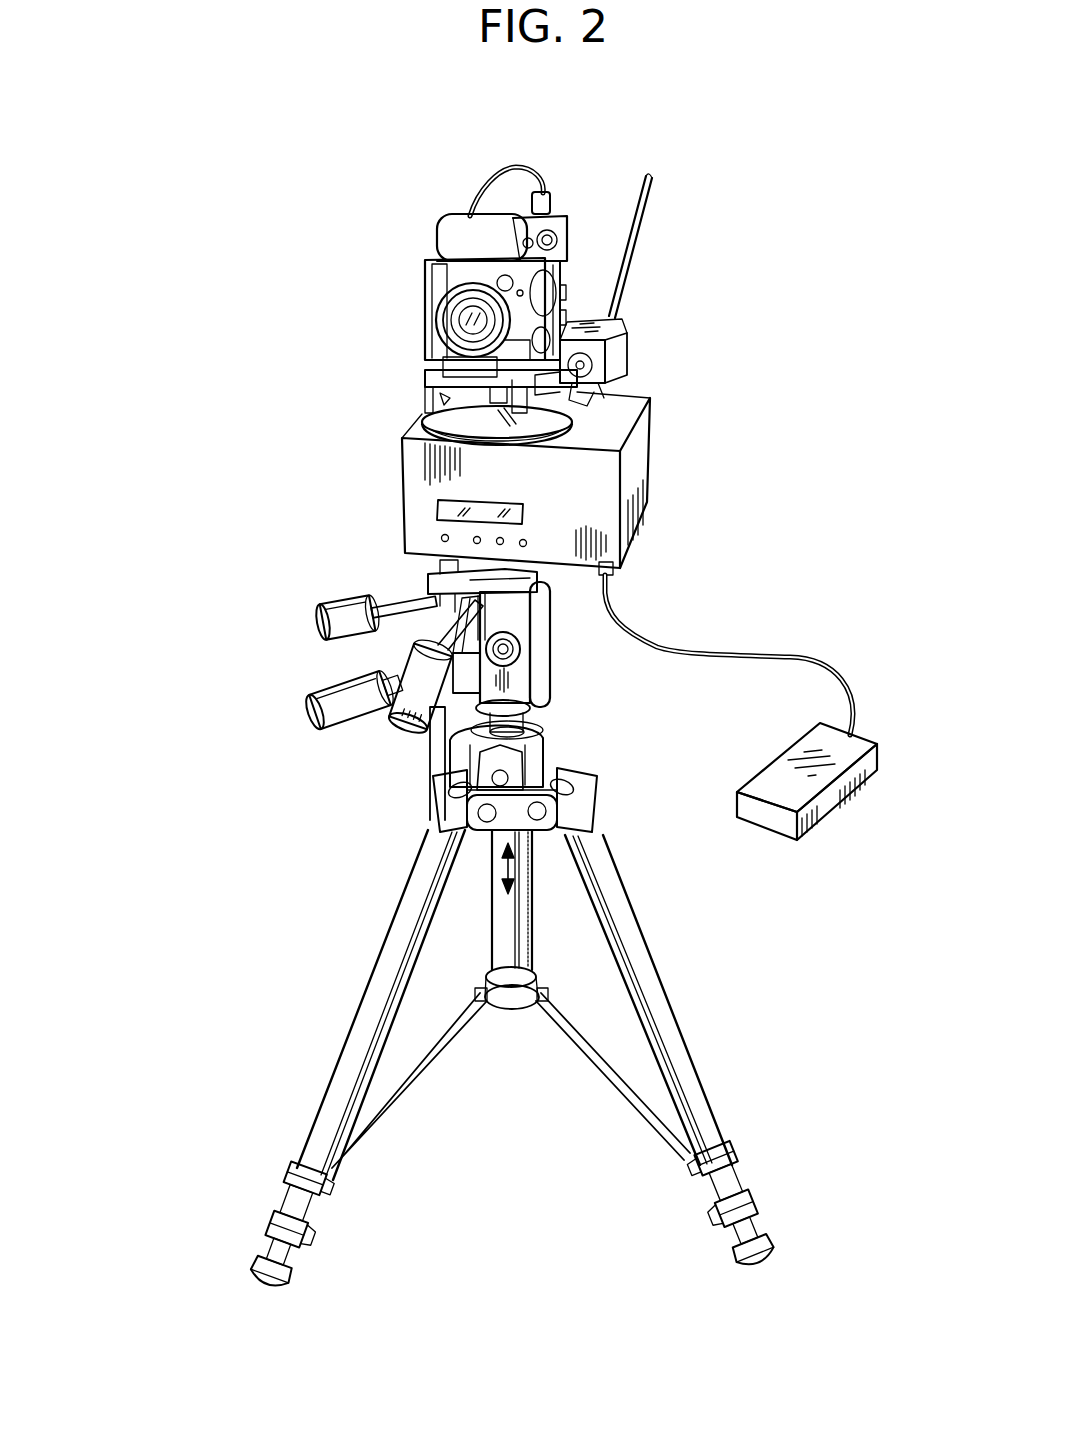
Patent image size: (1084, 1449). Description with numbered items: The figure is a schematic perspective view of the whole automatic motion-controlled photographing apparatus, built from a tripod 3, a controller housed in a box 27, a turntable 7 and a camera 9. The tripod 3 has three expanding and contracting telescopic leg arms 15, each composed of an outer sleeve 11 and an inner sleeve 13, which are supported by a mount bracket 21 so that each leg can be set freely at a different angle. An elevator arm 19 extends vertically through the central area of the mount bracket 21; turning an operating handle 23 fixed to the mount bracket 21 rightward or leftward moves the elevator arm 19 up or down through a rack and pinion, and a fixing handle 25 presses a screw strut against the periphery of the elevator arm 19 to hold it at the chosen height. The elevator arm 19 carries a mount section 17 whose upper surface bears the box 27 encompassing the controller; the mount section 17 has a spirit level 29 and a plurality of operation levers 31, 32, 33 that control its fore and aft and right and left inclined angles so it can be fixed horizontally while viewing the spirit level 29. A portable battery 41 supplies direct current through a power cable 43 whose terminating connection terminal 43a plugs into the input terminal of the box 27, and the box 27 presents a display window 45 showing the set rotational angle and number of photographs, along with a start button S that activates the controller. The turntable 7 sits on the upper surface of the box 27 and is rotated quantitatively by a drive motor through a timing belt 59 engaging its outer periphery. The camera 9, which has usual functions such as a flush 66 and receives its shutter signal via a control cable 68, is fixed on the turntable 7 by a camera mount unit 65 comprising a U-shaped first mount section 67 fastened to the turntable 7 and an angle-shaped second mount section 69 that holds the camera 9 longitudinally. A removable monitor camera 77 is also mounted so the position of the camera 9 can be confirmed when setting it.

The tripod 3 is at (653, 940).
The turntable 7 is at (412, 426).
The camera 9 is at (436, 213).
The outer sleeve 11 is at (340, 1090).
The inner sleeve 13 is at (270, 1250).
The telescopic leg arm 15 is at (216, 1047).
The mount section 17 is at (553, 640).
The elevator arm 19 is at (528, 912).
The mount bracket 21 is at (545, 757).
The operating handle 23 is at (437, 757).
The fixing handle 25 is at (438, 793).
The box 27 is at (642, 481).
The spirit level 29 is at (428, 583).
The operation lever 31 is at (325, 690).
The operation lever 32 is at (398, 725).
The operation lever 33 is at (325, 612).
The portable battery 41 is at (835, 797).
The power cable 43 is at (760, 652).
The terminating connection terminal 43a is at (612, 573).
The display window 45 is at (440, 505).
The start button S is at (446, 542).
The timing belt 59 is at (507, 420).
The camera mount unit 65 is at (297, 276).
The flush 66 is at (567, 298).
The first mount section 67 is at (416, 377).
The control cable 68 is at (530, 163).
The second mount section 69 is at (424, 300).
The monitor camera 77 is at (628, 336).